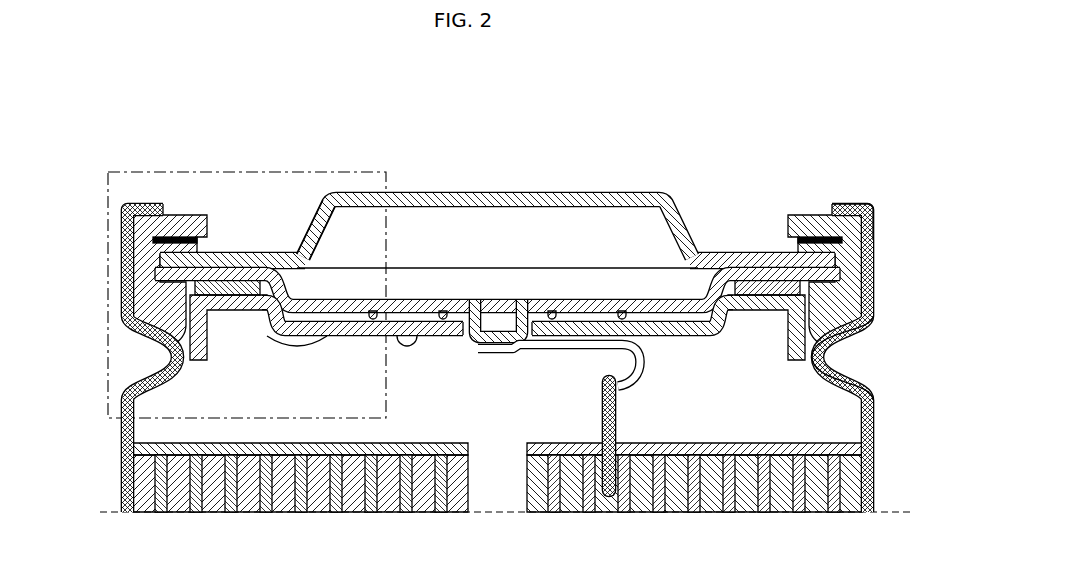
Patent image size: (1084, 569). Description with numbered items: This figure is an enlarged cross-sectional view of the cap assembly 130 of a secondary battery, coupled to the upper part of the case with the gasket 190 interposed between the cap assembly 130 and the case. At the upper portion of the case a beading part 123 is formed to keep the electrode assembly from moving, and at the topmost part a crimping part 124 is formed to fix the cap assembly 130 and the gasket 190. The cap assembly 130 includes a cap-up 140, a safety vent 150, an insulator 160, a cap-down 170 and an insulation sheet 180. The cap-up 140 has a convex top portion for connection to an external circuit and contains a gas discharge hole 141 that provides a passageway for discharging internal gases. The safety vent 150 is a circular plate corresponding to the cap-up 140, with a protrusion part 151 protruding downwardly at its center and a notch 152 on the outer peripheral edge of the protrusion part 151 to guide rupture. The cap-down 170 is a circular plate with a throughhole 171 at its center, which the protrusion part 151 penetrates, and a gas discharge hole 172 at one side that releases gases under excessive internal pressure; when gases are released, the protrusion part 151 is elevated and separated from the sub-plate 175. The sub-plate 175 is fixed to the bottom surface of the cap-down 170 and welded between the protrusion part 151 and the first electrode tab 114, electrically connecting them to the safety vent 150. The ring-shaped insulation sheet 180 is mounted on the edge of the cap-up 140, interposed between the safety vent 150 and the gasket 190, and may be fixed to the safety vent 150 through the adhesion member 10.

The adhesion member 10 is at (130, 243).
The first electrode tab 114 is at (612, 405).
The beading part 123 is at (830, 348).
The crimping part 124 is at (850, 203).
The cap assembly 130 is at (205, 113).
The cap-up 140 is at (604, 193).
The gas discharge hole 141 is at (304, 217).
The safety vent 150 is at (648, 302).
The protrusion part 151 is at (503, 327).
The notch 152 is at (373, 305).
The insulator 160 is at (762, 272).
The cap-down 170 is at (432, 325).
The throughhole 171 is at (572, 300).
The gas discharge hole 172 is at (258, 300).
The sub-plate 175 is at (396, 332).
The insulation sheet 180 is at (197, 241).
The gasket 190 is at (840, 292).